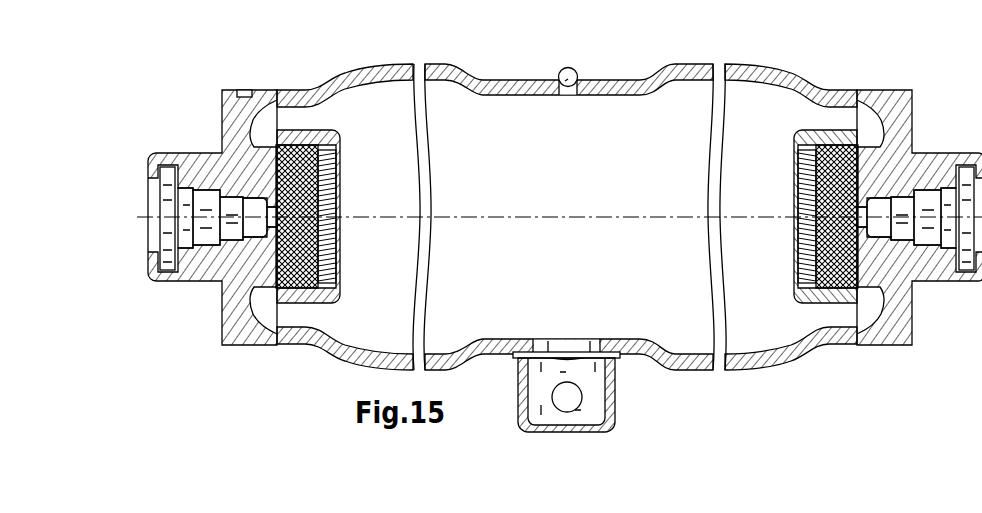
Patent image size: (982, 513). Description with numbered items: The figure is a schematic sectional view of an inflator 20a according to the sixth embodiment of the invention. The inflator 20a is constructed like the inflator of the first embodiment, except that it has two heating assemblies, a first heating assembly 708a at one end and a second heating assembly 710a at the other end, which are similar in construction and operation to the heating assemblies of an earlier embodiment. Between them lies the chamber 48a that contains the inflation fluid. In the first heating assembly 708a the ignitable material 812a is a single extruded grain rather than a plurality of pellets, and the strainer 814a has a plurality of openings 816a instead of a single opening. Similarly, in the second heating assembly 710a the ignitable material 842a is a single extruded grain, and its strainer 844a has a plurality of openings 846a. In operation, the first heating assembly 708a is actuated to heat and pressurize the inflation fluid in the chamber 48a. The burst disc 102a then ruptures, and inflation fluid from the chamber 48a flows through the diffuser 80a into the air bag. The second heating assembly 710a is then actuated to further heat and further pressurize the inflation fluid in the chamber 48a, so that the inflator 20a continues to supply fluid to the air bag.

The inflator 20a is at (574, 52).
The chamber 48a is at (536, 285).
The first heating assembly 708a is at (371, 175).
The second heating assembly 710a is at (762, 159).
The burst disc 102a is at (563, 356).
The diffuser 80a is at (616, 401).
The ignitable material 812a is at (312, 296).
The strainer 814a is at (337, 267).
The openings 816a is at (348, 172).
The ignitable material 842a is at (840, 288).
The strainer 844a is at (807, 271).
The openings 846a is at (793, 214).